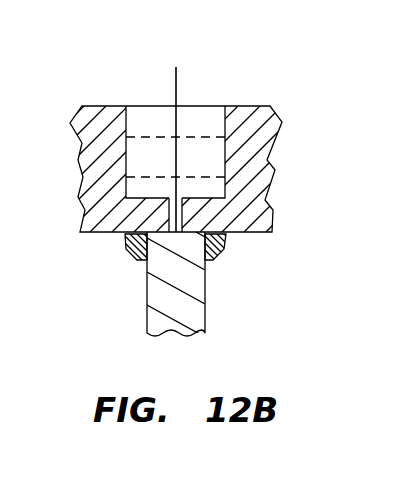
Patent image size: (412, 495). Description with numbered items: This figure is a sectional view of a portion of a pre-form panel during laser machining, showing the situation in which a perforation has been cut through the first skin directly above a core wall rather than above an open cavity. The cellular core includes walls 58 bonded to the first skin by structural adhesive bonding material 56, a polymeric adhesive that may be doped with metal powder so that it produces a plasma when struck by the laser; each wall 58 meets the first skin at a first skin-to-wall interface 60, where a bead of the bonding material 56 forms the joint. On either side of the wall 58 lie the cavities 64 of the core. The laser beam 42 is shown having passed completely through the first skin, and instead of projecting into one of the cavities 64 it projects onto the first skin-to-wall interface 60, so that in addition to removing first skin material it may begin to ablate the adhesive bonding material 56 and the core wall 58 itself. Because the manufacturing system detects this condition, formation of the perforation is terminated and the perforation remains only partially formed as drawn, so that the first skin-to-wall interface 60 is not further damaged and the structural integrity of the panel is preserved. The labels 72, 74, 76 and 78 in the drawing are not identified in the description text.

The laser beam 42 is at (176, 72).
The structural adhesive bonding material 56 is at (224, 246).
The wall 58 is at (288, 116).
The first skin-to-wall interface 60 is at (192, 228).
The cavity 64 is at (109, 304).
The chamber 72 is at (140, 125).
The first fluid level 74 is at (147, 157).
The second fluid level 76 is at (138, 183).
The outlet passage 78 is at (135, 217).